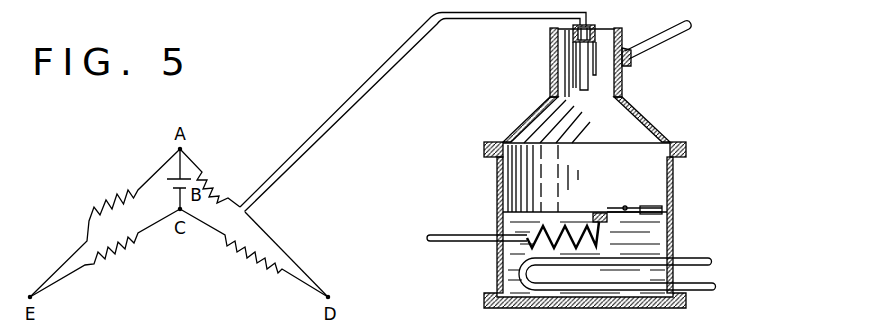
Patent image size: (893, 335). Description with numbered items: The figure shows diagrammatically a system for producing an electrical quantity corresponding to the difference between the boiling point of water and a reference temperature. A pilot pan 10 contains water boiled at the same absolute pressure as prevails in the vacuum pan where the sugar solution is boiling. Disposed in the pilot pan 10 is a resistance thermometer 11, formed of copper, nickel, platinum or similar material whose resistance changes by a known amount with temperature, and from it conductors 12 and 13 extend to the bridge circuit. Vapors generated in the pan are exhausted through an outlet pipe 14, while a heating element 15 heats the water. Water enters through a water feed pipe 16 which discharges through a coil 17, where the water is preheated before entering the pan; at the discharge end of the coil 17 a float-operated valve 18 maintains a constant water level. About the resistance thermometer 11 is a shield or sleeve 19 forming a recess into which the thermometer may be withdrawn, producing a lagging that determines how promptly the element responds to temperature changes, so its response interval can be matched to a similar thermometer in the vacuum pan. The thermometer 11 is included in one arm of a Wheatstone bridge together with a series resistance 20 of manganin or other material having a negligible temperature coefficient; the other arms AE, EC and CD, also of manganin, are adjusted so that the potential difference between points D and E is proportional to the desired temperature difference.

The pilot pan 10 is at (655, 128).
The resistance thermometer 11 is at (583, 71).
The conductor 12 is at (413, 112).
The conductor 13 is at (418, 29).
The outlet pipe 14 is at (676, 34).
The heating element 15 is at (690, 258).
The water feed pipe 16 is at (478, 235).
The coil 17 is at (540, 230).
The float-operated valve 18 is at (600, 210).
The shield or sleeve 19 is at (594, 27).
The resistance 20 is at (217, 175).